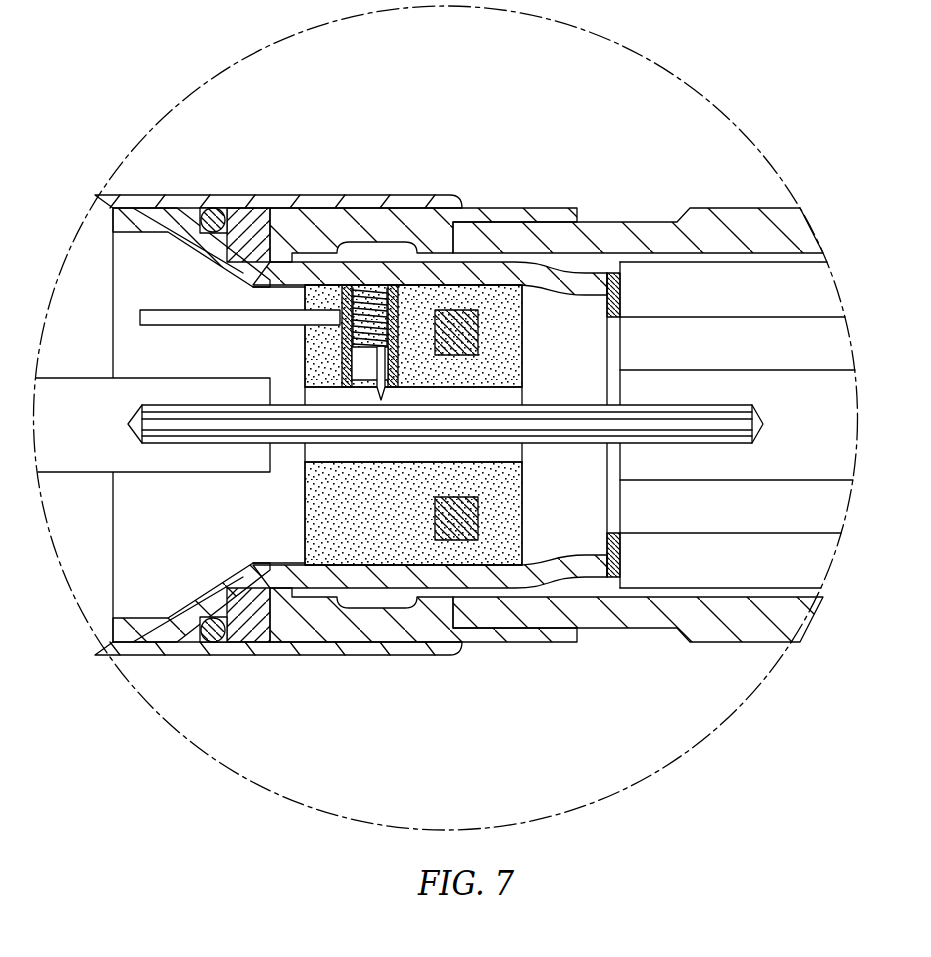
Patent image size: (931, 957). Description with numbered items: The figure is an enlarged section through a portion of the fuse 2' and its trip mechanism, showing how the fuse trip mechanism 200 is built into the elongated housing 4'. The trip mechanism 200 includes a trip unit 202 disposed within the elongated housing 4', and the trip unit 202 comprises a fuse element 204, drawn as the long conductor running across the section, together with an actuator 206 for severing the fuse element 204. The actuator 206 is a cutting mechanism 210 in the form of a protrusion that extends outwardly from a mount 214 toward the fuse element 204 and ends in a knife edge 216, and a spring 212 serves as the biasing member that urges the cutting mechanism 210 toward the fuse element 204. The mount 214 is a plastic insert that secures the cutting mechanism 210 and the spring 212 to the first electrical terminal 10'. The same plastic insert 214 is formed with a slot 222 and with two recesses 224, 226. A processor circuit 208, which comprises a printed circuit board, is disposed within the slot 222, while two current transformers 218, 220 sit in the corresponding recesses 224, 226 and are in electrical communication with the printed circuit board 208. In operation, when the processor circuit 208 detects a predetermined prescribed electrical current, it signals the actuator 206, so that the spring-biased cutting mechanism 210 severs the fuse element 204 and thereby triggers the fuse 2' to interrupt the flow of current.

The fuse trip mechanism 200 is at (412, 167).
The trip unit 202 is at (300, 250).
The fuse element 204 is at (540, 412).
The actuator 206 is at (413, 280).
The processor circuit 208 is at (176, 306).
The cutting mechanism 210 is at (385, 396).
The spring 212 is at (338, 348).
The mount 214 is at (450, 308).
The knife edge 216 is at (362, 399).
The current transformer 218 is at (487, 318).
The current transformer 220 is at (483, 508).
The slot 222 is at (330, 318).
The recess 224 is at (476, 333).
The recess 226 is at (472, 522).
The first electrical terminal 10' is at (278, 186).
The elongated housing 4' is at (654, 403).
The fuse 2' is at (306, 452).